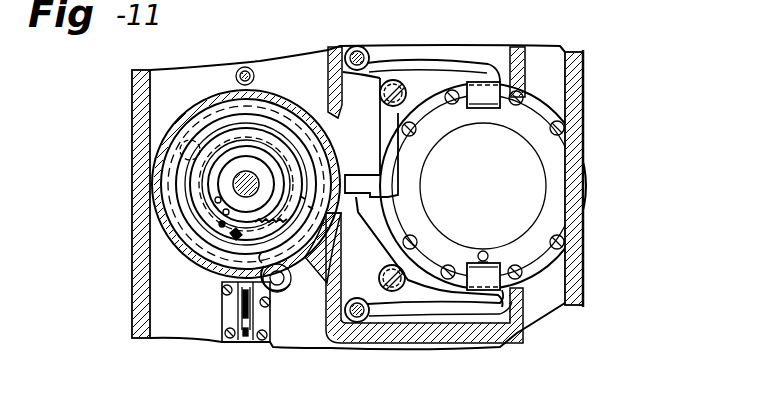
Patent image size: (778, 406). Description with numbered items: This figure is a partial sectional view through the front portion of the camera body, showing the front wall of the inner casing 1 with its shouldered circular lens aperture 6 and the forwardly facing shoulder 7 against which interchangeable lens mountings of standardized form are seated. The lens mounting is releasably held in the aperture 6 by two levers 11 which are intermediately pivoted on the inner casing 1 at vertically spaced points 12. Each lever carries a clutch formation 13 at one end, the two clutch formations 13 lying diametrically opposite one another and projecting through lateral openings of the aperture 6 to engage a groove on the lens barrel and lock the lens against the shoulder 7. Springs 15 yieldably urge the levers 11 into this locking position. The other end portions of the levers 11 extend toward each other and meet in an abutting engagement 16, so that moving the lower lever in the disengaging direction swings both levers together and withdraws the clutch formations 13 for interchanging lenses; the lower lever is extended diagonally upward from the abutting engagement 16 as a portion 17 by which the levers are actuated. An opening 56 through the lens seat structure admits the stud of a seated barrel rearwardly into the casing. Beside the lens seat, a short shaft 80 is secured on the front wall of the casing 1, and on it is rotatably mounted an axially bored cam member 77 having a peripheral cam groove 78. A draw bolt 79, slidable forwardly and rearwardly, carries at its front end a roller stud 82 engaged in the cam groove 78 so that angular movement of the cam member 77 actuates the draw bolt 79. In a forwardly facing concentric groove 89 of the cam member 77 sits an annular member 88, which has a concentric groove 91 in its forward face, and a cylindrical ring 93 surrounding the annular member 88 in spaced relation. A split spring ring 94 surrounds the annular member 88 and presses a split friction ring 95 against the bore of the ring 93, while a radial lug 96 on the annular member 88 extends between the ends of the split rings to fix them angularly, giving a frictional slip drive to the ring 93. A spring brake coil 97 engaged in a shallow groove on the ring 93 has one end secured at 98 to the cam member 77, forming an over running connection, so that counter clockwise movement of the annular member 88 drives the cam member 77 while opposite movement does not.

The inner casing 1 is at (131, 82).
The lens aperture 6 is at (558, 172).
The shoulder 7 is at (552, 186).
The levers 11 is at (425, 78).
The pivot 12 is at (393, 80).
The clutch formations 13 is at (486, 108).
The springs 15 is at (462, 62).
The abutting engagement 16 is at (380, 176).
The diagonally extended end portion 17 is at (318, 105).
The opening 56 is at (481, 250).
The cam member 77 is at (212, 260).
The cam groove 78 is at (215, 272).
The draw bolt 79 is at (278, 293).
The shaft 80 is at (248, 174).
The roller stud 82 is at (284, 272).
The annular member 88 is at (212, 210).
The concentric groove 89 is at (190, 182).
The concentric groove 91 is at (182, 160).
The cylindrical ring 93 is at (205, 195).
The split spring ring 94 is at (210, 135).
The split friction ring 95 is at (220, 146).
The radial lug 96 is at (203, 243).
The spring brake coil 97 is at (195, 232).
The secured end 98 is at (217, 277).